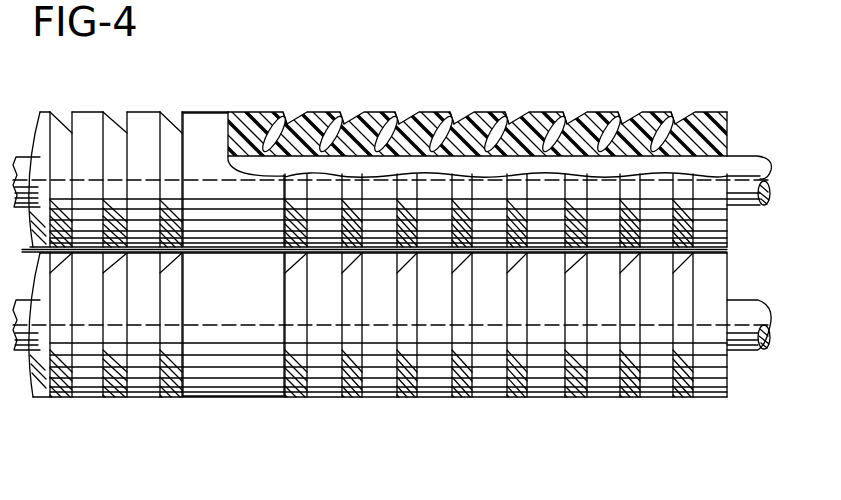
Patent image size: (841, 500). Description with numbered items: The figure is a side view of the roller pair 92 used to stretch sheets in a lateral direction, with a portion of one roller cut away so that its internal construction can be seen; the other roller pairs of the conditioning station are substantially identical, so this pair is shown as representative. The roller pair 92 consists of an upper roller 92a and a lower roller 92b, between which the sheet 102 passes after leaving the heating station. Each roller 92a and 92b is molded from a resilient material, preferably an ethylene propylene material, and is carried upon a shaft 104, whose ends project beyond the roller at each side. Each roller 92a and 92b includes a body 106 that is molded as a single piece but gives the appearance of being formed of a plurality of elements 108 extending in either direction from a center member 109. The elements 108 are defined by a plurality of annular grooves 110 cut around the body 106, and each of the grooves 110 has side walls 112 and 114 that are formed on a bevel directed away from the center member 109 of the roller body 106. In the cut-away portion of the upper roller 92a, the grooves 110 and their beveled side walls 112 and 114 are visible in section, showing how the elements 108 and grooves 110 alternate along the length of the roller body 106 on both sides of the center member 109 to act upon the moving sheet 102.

The roller pair 92 is at (522, 98).
The roller 92a is at (294, 108).
The roller 92b is at (272, 405).
The sheet 102 is at (200, 252).
The shaft 104 is at (752, 165).
The body 106 is at (208, 128).
The elements 108 is at (137, 116).
The center member 109 is at (231, 107).
The annular grooves 110 is at (453, 120).
The side wall 112 is at (342, 112).
The side wall 114 is at (344, 118).